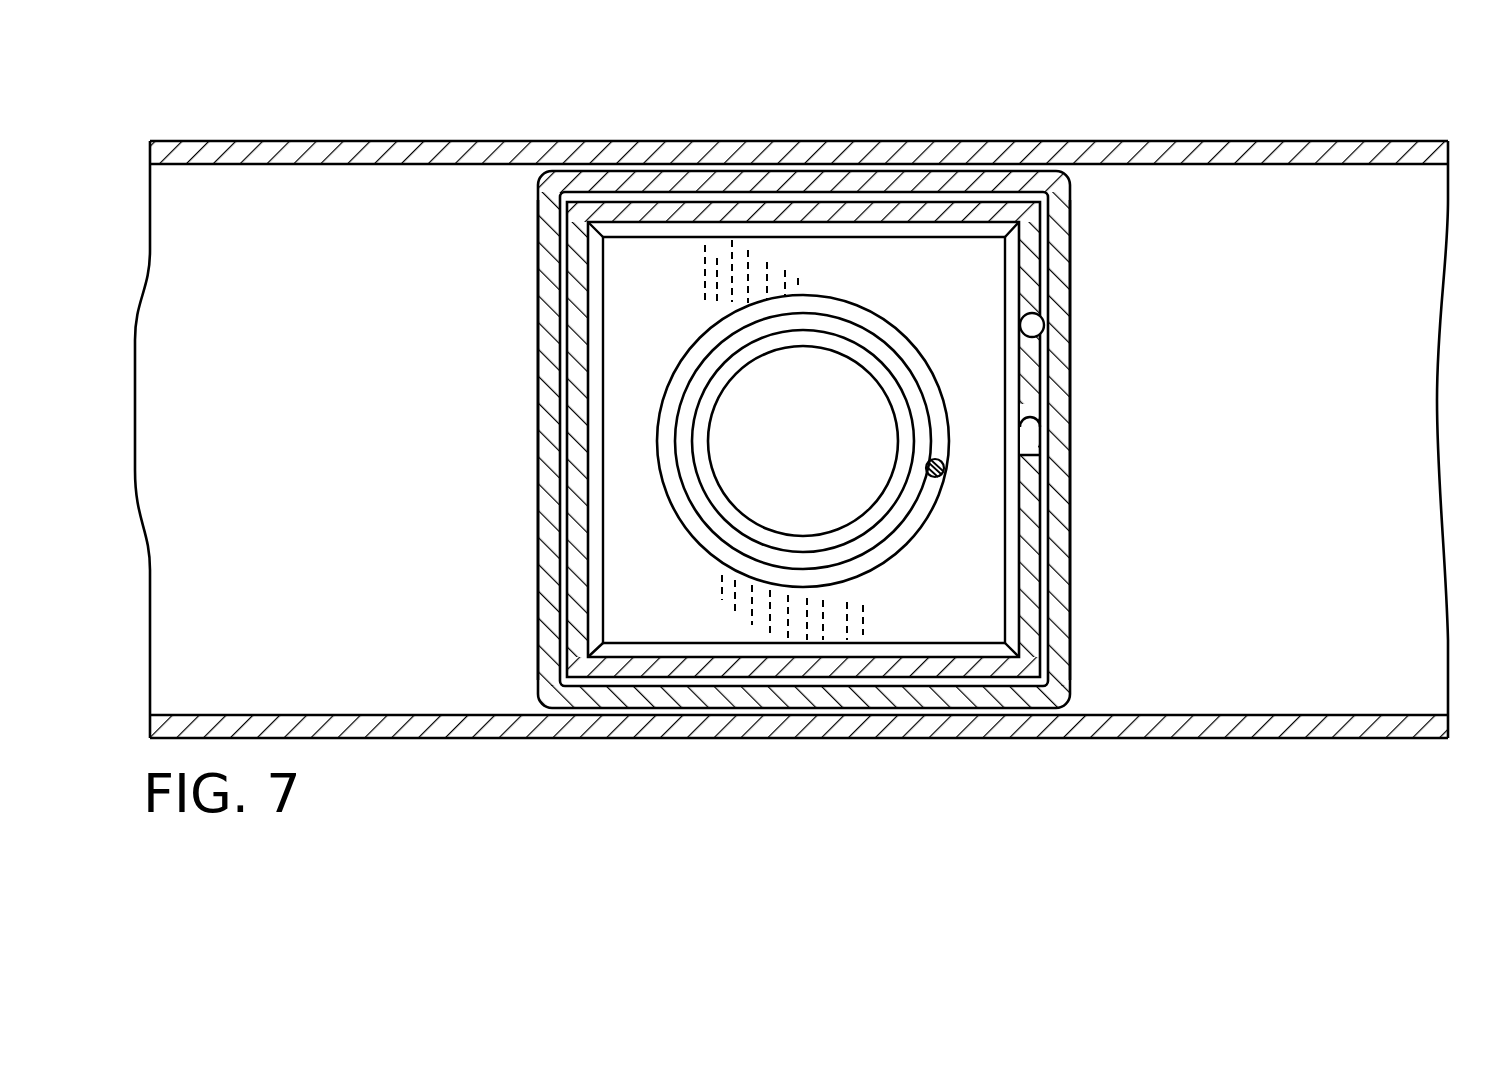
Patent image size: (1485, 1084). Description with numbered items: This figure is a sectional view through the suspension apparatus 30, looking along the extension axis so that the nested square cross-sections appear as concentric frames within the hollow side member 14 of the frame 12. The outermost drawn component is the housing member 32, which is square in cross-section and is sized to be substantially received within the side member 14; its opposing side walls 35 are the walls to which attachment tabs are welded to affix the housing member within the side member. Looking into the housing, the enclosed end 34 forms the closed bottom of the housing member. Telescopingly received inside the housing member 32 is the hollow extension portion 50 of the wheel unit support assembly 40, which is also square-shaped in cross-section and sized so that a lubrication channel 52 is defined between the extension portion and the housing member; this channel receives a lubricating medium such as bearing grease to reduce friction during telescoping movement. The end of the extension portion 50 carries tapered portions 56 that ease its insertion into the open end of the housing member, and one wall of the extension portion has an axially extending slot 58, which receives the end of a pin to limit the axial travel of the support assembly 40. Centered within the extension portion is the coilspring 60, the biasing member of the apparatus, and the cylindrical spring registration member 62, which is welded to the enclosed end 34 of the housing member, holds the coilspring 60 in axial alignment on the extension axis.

The frame 12 is at (1298, 131).
The hollow side member 14 is at (1330, 423).
The suspension apparatus 30 is at (819, 393).
The housing member 32 is at (819, 393).
The enclosed end 34 is at (692, 301).
The side walls 35 is at (540, 548).
The wheel unit support assembly 40 is at (567, 448).
The hollow extension portion 50 is at (1072, 266).
The lubrication channel 52 is at (1042, 320).
The tapered portions 56 is at (593, 594).
The axially extending slot 58 is at (1030, 414).
The coilspring 60 is at (897, 542).
The spring registration member 62 is at (848, 348).